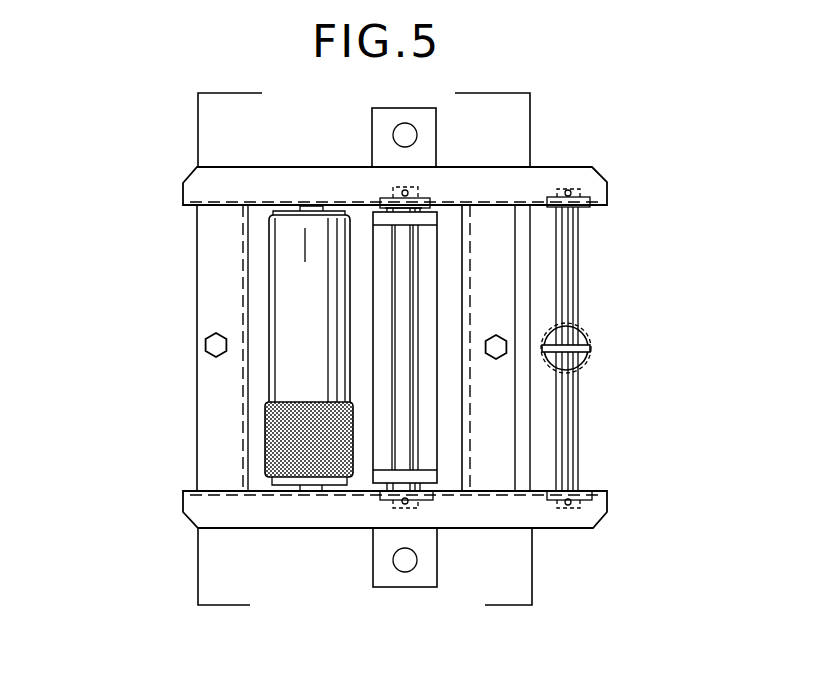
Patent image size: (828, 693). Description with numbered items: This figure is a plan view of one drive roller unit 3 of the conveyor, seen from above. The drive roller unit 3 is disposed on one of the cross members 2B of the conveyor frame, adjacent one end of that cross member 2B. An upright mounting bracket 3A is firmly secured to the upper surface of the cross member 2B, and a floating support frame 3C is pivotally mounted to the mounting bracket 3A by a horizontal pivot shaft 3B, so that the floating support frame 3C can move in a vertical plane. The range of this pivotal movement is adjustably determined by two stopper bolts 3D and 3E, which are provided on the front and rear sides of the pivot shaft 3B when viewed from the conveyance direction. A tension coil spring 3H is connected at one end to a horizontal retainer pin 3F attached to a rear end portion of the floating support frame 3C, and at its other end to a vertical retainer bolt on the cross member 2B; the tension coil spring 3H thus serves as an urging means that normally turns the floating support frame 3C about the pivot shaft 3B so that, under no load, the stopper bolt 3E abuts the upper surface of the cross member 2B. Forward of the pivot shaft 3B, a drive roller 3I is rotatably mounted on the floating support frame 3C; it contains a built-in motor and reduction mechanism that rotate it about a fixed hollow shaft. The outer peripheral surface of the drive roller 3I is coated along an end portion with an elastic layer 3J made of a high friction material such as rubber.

The cross member 2B is at (517, 129).
The drive roller unit 3 is at (158, 196).
The upright mounting bracket 3A is at (517, 347).
The horizontal pivot shaft 3B is at (408, 445).
The floating support frame 3C is at (208, 240).
The stopper bolt 3D is at (205, 346).
The stopper bolt 3E is at (504, 338).
The horizontal retainer pin 3F is at (574, 425).
The tension coil spring 3H is at (590, 357).
The drive roller 3I is at (288, 288).
The elastic layer 3J is at (280, 437).